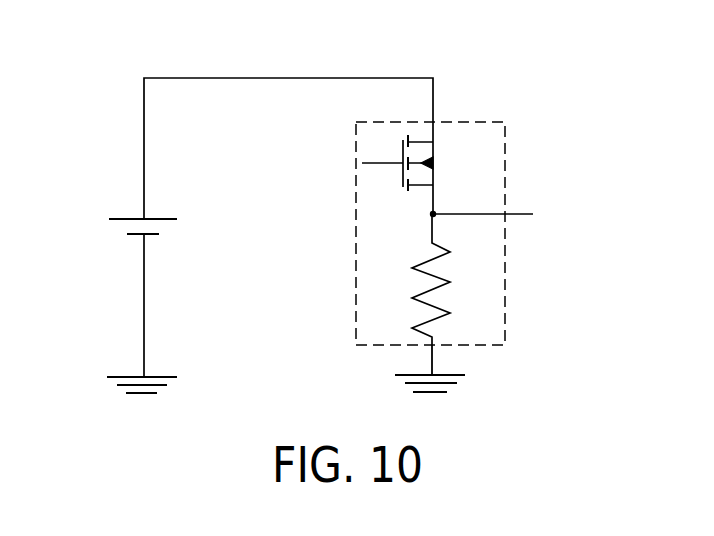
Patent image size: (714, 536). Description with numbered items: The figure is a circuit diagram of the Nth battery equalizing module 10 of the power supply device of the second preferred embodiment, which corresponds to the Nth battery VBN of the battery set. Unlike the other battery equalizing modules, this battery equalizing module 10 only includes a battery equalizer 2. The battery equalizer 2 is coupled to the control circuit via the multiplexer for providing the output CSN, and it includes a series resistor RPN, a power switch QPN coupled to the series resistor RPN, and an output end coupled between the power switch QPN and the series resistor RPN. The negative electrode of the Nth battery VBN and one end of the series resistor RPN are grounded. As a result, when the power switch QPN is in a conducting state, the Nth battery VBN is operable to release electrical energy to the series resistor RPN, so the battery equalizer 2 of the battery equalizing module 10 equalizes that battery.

The battery equalizing module 10 is at (543, 92).
The battery equalizer 2 is at (505, 143).
The power switch QPN is at (443, 174).
The series resistor RPN is at (451, 279).
The Nth battery VBN is at (122, 227).
The output CSN is at (490, 200).